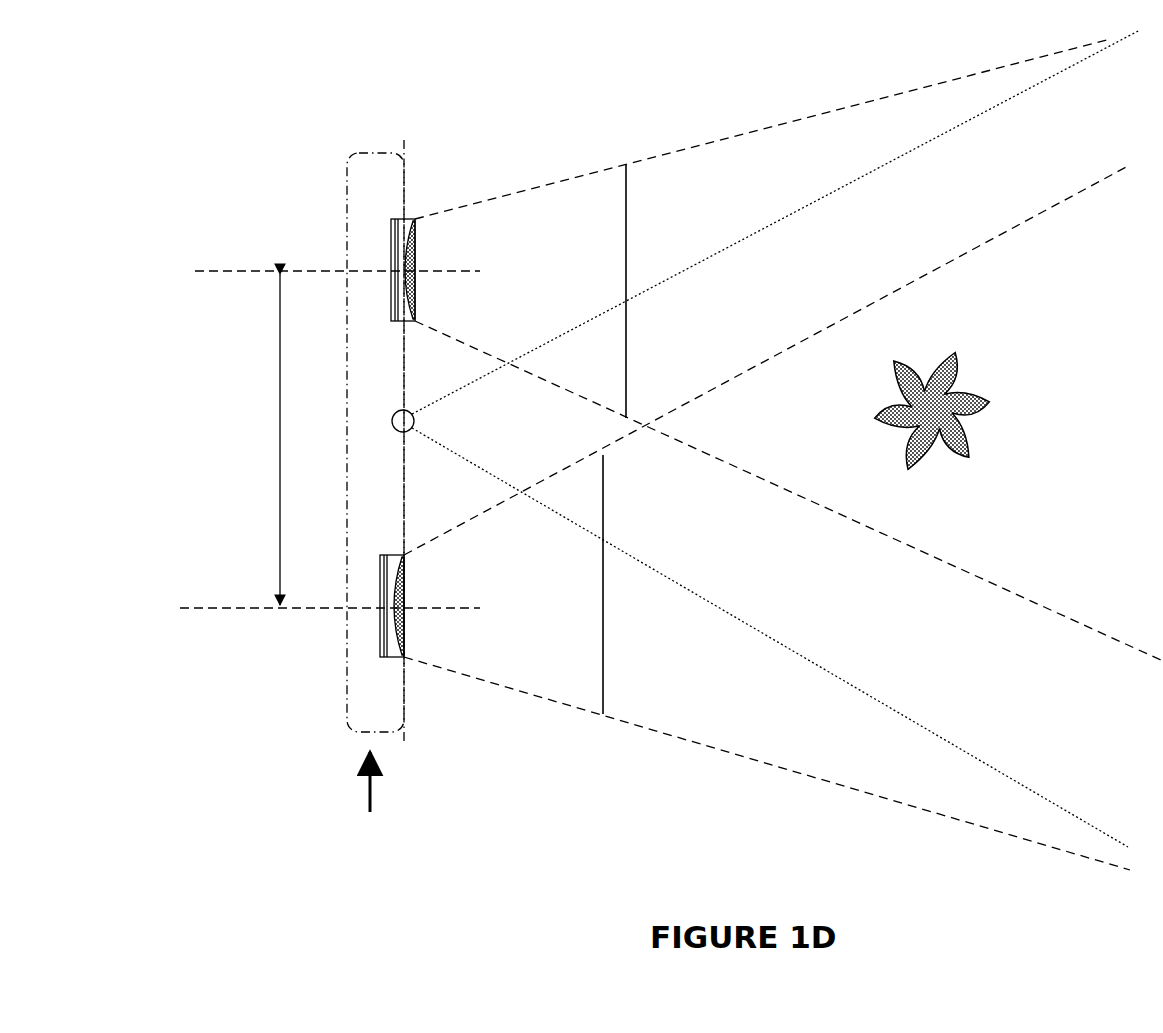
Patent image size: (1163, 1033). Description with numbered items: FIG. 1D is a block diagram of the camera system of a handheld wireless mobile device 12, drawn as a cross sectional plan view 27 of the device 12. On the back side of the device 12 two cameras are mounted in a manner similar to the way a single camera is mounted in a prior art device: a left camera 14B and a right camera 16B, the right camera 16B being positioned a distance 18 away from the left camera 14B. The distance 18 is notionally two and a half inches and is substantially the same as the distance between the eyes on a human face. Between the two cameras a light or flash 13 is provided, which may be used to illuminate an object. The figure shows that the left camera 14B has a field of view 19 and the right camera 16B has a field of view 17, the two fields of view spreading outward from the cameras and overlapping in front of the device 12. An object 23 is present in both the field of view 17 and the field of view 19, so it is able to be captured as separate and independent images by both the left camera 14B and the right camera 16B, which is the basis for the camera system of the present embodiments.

The handheld wireless mobile device 12 is at (322, 681).
The light or flash 13 is at (399, 431).
The left camera 14B is at (410, 615).
The right camera 16B is at (428, 254).
The field of view 17 is at (630, 263).
The distance 18 is at (277, 375).
The field of view 19 is at (606, 592).
The object 23 is at (977, 362).
The cross sectional plan view 27 is at (348, 826).